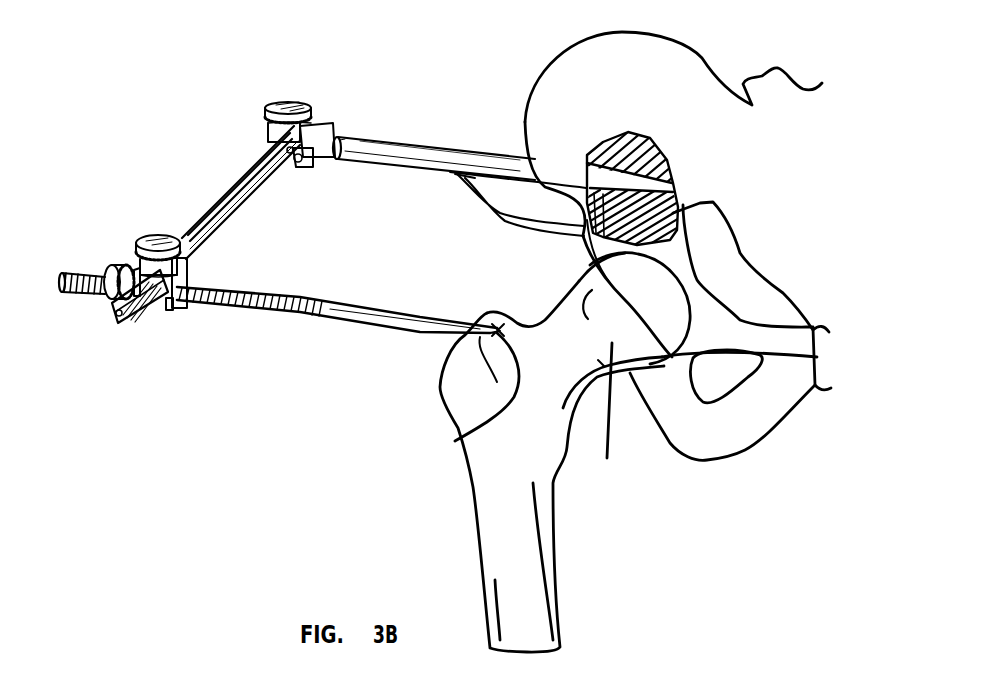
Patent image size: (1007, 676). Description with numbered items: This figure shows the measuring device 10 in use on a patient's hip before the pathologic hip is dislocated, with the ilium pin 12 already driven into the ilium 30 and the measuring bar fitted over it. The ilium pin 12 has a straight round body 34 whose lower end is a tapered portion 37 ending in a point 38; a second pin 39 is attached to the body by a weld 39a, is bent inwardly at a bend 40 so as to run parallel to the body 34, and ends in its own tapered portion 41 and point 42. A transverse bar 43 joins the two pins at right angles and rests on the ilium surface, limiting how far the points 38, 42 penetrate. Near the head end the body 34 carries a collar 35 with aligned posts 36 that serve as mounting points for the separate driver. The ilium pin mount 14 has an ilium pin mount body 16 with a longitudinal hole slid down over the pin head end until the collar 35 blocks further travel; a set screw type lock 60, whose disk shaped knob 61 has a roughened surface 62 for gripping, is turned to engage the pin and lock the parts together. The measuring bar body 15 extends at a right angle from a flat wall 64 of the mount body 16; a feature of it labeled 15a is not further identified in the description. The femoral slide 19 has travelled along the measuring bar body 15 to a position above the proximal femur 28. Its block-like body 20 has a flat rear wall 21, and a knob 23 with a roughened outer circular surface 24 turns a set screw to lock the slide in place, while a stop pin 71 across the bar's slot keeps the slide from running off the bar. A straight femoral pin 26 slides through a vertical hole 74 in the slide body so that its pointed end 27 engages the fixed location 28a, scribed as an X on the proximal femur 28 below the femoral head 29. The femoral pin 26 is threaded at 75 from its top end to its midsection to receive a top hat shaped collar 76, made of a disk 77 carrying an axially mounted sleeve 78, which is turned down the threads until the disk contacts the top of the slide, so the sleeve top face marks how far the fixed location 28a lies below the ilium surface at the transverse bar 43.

The measuring device 10 is at (158, 181).
The ilium pin 12 is at (404, 183).
The ilium pin mount 14 is at (332, 90).
The measuring bar body 15 is at (262, 152).
The slot 15a is at (140, 294).
The ilium pin mount body 16 is at (288, 170).
The femoral slide 19 is at (160, 316).
The femoral slide body 20 is at (196, 270).
The rear wall 21 is at (186, 308).
The knob 23 is at (151, 238).
The roughened outer circular surface 24 is at (200, 258).
The femoral pin 26 is at (336, 321).
The pin pointed end 27 is at (462, 330).
The proximal femur 28 is at (534, 456).
The fixed location 28a is at (455, 440).
The femoral head 29 is at (612, 430).
The ilium 30 is at (661, 91).
The ilium pin body 34 is at (452, 159).
The collar 35 is at (335, 130).
The posts 36 is at (318, 165).
The bottom tapered portion 37 is at (664, 144).
The point 38 is at (677, 181).
The second pin 39 is at (520, 160).
The weld 39a is at (471, 178).
The bend 40 is at (507, 222).
The tapered portion 41 is at (700, 217).
The point 42 is at (738, 257).
The transverse bar 43 is at (690, 197).
The set screw type lock 60 is at (289, 86).
The disk shaped knob 61 is at (279, 98).
The roughened surface 62 is at (262, 121).
The flat wall 64 is at (280, 167).
The stop pin 71 is at (150, 312).
The vertical hole 74 is at (160, 322).
The threads 75 is at (276, 306).
The top hat shaped collar 76 is at (110, 249).
The disk 77 is at (122, 298).
The sleeve 78 is at (81, 272).